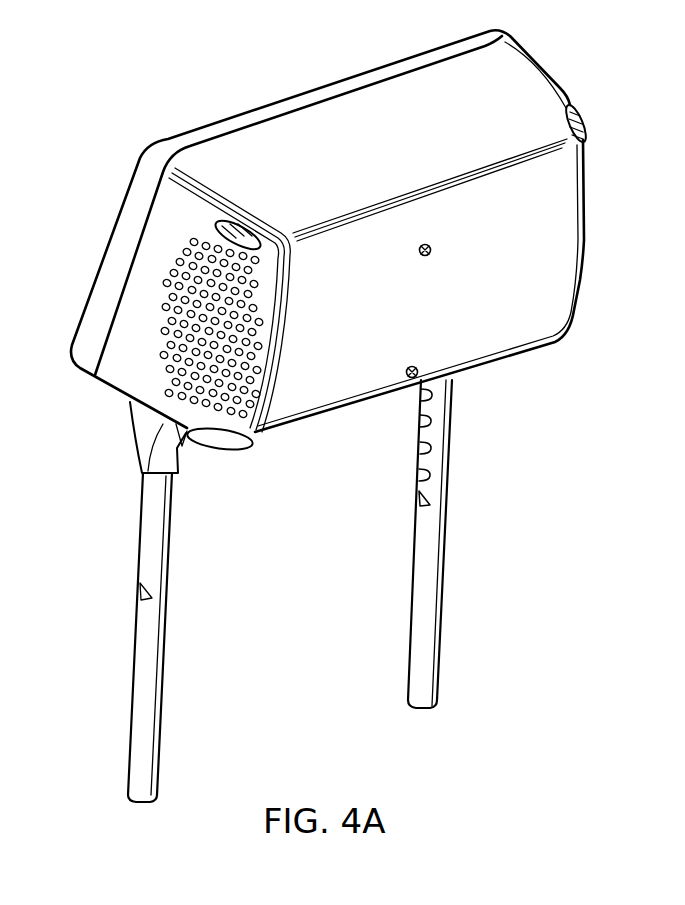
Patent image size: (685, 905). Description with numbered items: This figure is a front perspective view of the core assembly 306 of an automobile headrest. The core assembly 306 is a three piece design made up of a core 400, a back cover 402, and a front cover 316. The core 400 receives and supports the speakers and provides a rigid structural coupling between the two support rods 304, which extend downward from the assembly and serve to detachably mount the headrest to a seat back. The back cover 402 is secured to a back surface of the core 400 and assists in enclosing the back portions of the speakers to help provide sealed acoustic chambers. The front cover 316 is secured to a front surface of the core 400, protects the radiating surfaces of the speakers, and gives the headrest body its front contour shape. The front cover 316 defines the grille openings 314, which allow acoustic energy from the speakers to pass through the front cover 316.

The support rods 304 is at (124, 746).
The core assembly 306 is at (114, 79).
The grille openings 314 is at (588, 274).
The front cover 316 is at (438, 310).
The core 400 is at (329, 112).
The back cover 402 is at (149, 152).